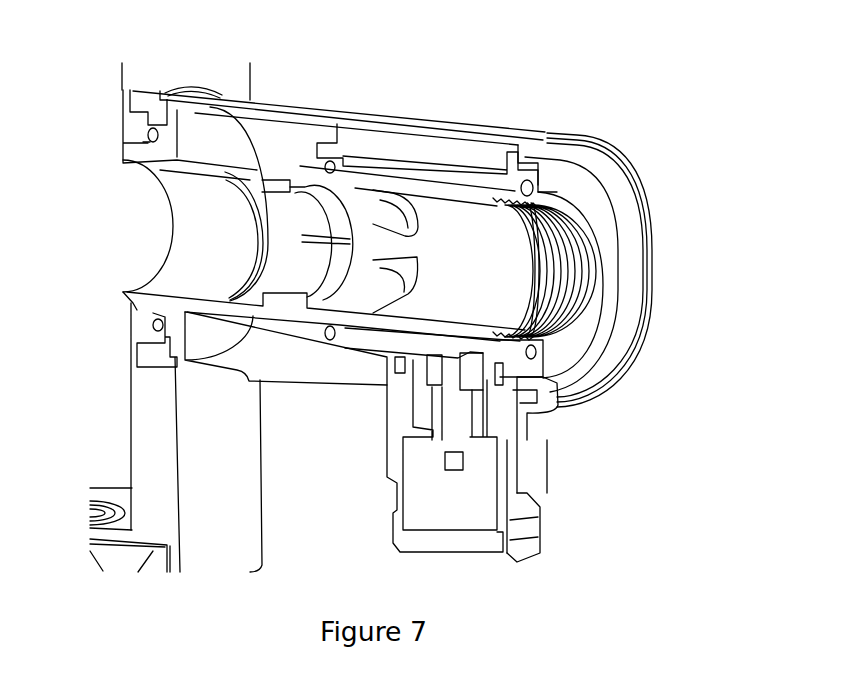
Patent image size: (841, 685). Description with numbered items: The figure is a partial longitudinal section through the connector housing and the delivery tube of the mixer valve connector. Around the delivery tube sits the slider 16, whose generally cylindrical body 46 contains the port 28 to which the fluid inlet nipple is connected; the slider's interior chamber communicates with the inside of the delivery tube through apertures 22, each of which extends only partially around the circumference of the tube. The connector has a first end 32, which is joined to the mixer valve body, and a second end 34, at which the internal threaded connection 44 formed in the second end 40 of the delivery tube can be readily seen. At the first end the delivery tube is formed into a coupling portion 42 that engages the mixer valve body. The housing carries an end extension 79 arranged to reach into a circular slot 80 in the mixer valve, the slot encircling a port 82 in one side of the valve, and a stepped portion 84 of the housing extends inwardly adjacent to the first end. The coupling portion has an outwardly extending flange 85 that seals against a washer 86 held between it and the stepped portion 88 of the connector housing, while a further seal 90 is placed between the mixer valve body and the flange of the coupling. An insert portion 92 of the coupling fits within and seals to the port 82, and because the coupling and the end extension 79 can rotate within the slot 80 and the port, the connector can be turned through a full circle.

The slider 16 is at (372, 145).
The apertures 22 is at (315, 195).
The port 28 is at (523, 433).
The first end 32 is at (281, 461).
The second end 34 is at (632, 145).
The second end 40 is at (577, 330).
The coupling portion 42 is at (170, 135).
The internal threaded connection 44 is at (572, 262).
The cylindrical body 46 is at (507, 153).
The end extension 79 is at (158, 100).
The circular slot 80 is at (143, 355).
The port 82 is at (125, 292).
The stepped portion 84 is at (155, 108).
The outwardly extending flange 85 is at (177, 380).
The washer 86 is at (158, 100).
The stepped portion 88 is at (166, 200).
The seal 90 is at (153, 324).
The insert portion 92 is at (143, 290).